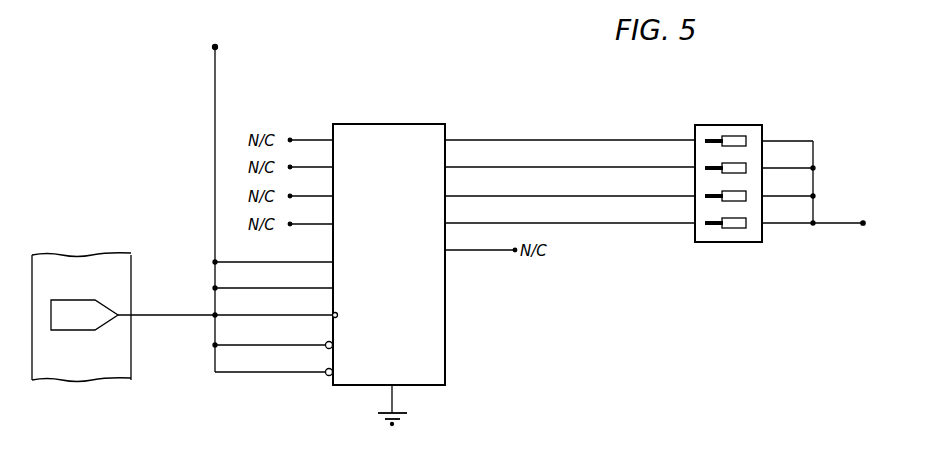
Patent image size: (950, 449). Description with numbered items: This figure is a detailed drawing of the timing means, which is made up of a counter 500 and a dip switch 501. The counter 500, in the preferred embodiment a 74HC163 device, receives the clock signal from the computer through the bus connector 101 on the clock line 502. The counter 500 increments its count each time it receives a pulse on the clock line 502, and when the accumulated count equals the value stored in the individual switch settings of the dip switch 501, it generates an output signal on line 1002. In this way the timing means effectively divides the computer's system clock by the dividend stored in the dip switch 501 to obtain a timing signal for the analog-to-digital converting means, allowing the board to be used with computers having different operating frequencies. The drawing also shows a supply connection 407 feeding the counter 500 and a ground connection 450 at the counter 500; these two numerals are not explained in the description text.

The digital supply voltage line +5V DVcc 407 is at (215, 111).
The clock line 502 is at (167, 312).
The bus connector 101 is at (97, 368).
The counter 500 is at (445, 354).
The ground 450 is at (407, 416).
The dip switch 501 is at (731, 122).
The output line 1002 is at (843, 228).